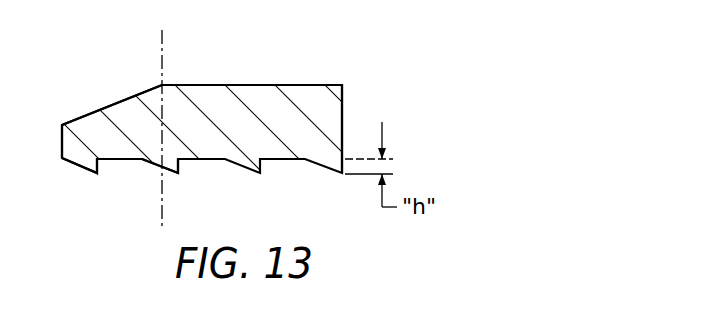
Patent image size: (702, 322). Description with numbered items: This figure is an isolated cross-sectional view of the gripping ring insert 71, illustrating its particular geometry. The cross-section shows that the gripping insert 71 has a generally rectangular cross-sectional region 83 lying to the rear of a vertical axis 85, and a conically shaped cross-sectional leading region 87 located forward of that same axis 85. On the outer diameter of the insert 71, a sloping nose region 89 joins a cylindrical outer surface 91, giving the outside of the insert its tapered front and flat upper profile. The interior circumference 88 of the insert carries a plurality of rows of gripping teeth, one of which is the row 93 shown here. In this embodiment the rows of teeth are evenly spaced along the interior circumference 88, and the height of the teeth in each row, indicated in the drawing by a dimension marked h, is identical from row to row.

The gripping ring insert 71 is at (366, 100).
The rectangular cross-sectional region 83 is at (250, 95).
The vertical axis 85 is at (161, 42).
The conically shaped cross-sectional leading region 87 is at (122, 110).
The interior circumference 88 is at (212, 159).
The sloping nose region 89 is at (80, 118).
The cylindrical outer surface 91 is at (295, 85).
The row of gripping teeth 93 is at (99, 173).